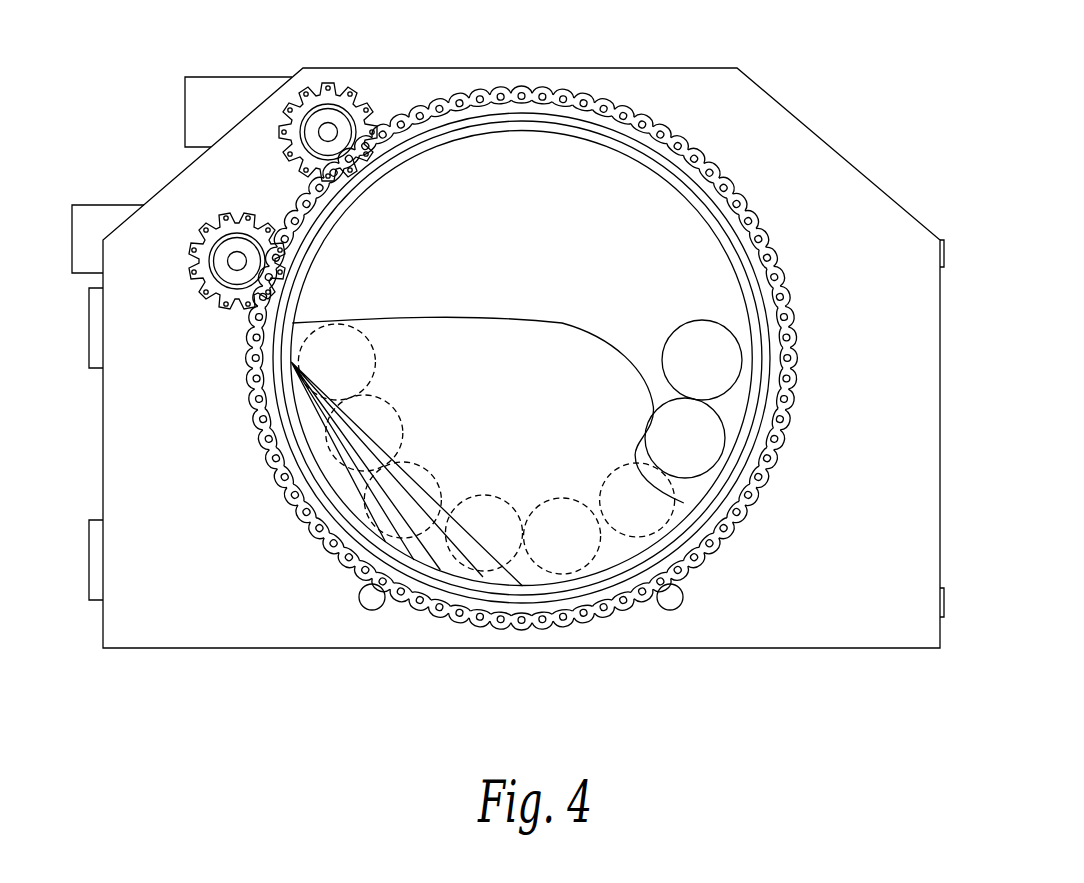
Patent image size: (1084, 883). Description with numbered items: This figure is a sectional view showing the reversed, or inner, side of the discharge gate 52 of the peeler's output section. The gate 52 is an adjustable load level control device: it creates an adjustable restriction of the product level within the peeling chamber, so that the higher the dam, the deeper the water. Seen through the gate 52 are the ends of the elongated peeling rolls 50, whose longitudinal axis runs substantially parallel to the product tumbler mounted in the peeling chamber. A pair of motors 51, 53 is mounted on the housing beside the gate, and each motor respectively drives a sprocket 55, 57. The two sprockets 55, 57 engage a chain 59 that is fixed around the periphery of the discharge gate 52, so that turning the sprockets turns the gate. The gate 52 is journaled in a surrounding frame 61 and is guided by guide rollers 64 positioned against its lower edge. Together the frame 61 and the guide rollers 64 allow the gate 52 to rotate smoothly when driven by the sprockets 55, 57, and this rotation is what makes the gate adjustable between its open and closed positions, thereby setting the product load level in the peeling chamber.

The elongated peeling rolls 50 is at (723, 334).
The motor 51 is at (103, 205).
The discharge gate 52 is at (525, 439).
The motor 53 is at (222, 77).
The sprocket 55 is at (207, 272).
The sprocket 57 is at (300, 146).
The chain 59 is at (676, 141).
The surrounding frame 61 is at (858, 259).
The guide rollers 64 is at (680, 605).